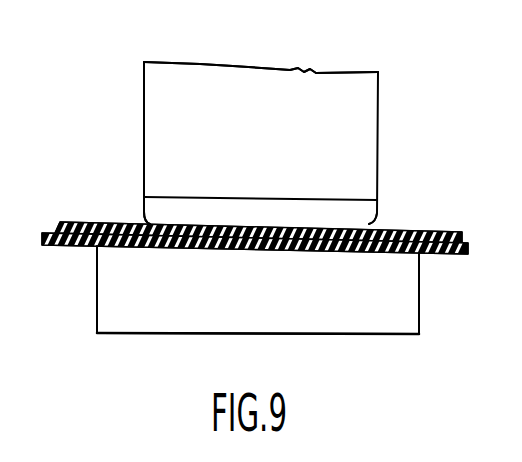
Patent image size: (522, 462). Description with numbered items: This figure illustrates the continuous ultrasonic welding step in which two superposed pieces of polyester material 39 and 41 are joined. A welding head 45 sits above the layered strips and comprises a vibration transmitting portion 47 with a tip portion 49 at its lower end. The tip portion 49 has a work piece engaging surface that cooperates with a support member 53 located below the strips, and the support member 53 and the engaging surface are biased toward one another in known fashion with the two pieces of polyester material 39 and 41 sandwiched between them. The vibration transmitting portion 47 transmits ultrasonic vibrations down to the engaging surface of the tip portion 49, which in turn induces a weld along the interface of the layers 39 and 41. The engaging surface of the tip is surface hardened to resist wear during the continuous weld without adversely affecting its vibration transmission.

The strip of polyester material 39 is at (58, 250).
The piece of polyester material 41 is at (83, 219).
The welding head 45 is at (134, 135).
The vibration transmitting portion 47 is at (323, 82).
The tip portion 49 is at (362, 213).
The support member 53 is at (408, 305).